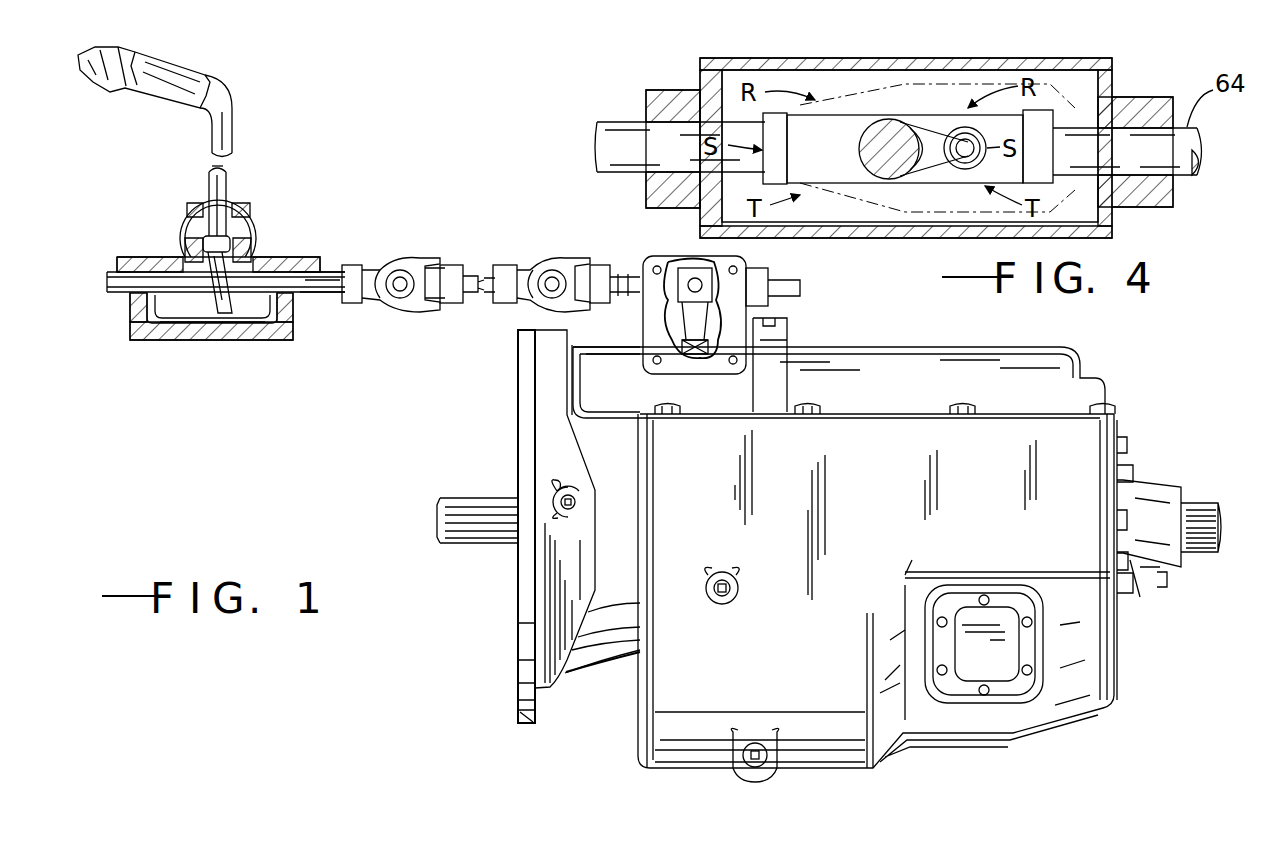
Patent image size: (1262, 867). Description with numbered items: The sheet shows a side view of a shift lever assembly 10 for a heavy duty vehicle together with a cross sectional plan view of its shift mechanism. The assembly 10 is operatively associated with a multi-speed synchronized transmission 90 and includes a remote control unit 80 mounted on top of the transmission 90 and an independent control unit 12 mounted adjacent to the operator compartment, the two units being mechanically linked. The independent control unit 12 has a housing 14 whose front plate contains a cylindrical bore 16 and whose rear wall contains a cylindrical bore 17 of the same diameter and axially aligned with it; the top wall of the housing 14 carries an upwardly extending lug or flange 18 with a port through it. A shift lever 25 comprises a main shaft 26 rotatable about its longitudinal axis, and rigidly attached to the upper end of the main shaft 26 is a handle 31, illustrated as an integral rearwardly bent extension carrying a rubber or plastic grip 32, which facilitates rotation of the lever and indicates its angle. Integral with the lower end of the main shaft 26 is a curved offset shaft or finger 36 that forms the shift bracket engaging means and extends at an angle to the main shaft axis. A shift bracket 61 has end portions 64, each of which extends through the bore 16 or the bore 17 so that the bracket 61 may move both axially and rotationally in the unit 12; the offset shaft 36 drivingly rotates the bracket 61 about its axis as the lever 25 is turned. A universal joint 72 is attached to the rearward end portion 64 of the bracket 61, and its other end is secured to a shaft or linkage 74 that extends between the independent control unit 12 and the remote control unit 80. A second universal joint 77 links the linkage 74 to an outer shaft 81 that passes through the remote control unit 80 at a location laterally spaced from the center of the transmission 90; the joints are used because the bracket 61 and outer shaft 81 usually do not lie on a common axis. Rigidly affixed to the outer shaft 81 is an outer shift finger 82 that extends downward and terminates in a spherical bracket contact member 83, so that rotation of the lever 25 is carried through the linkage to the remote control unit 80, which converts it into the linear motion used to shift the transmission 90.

In FIG. 1, the shift lever assembly 10 is at (380, 195).
In FIG. 1, the independent control unit 12 is at (160, 257).
In FIG. 1, the housing 14 is at (270, 342).
In FIG. 4, the housing 14 is at (860, 56).
In FIG. 4, the cylindrical bore 16 is at (675, 122).
In FIG. 4, the cylindrical bore 17 is at (1150, 170).
In FIG. 1, the lug or flange 18 is at (245, 250).
In FIG. 1, the shift lever 25 is at (232, 180).
In FIG. 1, the main shaft 26 is at (205, 188).
In FIG. 1, the handle 31 is at (225, 90).
In FIG. 1, the grip 32 is at (160, 100).
In FIG. 1, the offset shaft or finger 36 is at (215, 290).
In FIG. 4, the offset shaft or finger 36 is at (860, 152).
In FIG. 4, the shift bracket 61 is at (1075, 122).
In FIG. 1, the end portion 64 is at (336, 295).
In FIG. 4, the end portion 64 is at (615, 122).
In FIG. 1, the universal joint 72 is at (408, 262).
In FIG. 1, the shaft or linkage 74 is at (470, 300).
In FIG. 1, the second universal joint 77 is at (562, 262).
In FIG. 1, the remote control unit 80 is at (780, 345).
In FIG. 1, the outer shaft 81 is at (612, 305).
In FIG. 1, the outer shift finger 82 is at (653, 343).
In FIG. 1, the spherical bracket contact member 83 is at (668, 372).
In FIG. 1, the synchronized transmission 90 is at (1092, 357).